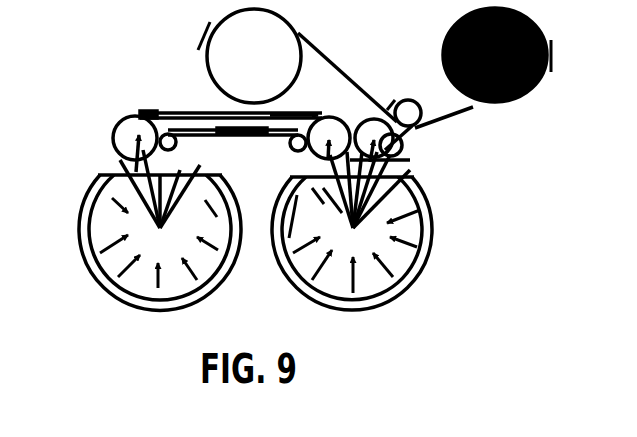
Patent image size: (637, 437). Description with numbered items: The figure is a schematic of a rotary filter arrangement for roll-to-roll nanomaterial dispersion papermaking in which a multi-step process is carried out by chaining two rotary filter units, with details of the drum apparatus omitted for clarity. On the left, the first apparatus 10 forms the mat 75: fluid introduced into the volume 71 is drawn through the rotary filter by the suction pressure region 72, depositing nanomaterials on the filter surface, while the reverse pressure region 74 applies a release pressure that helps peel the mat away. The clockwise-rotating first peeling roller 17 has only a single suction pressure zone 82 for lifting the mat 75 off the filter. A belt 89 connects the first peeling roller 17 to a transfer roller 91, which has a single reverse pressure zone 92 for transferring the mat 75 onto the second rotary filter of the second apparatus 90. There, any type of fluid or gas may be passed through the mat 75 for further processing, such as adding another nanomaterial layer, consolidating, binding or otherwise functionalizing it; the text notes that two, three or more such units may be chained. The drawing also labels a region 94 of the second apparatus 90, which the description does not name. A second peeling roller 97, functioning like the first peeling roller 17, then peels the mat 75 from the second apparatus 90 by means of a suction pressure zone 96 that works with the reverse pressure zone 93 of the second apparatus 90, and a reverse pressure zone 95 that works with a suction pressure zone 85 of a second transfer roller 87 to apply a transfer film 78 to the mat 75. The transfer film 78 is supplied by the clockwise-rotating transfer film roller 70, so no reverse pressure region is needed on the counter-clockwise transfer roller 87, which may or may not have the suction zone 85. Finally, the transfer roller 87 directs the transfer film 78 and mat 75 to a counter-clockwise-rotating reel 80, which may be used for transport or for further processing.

The apparatus 10 is at (88, 312).
The peeling roller 17 is at (120, 142).
The transfer film roller 70 is at (248, 45).
The volume 71 is at (83, 225).
The suction pressure region 72 is at (83, 247).
The reverse pressure region 74 is at (97, 193).
The mat 75 is at (227, 115).
The transfer film 78 is at (332, 58).
The reel 80 is at (546, 30).
The suction pressure zone 82 is at (125, 155).
The suction pressure zone 85 is at (422, 121).
The transfer roller 87 is at (414, 100).
The belt 89 is at (217, 132).
The second apparatus 90 is at (403, 272).
The transfer roller 91 is at (320, 116).
The reverse pressure zone 92 is at (362, 122).
The reverse pressure zone 93 is at (400, 192).
The drum surface 94 is at (403, 262).
The reverse pressure zone 95 is at (410, 133).
The suction pressure zone 96 is at (395, 160).
The peeling roller 97 is at (403, 146).